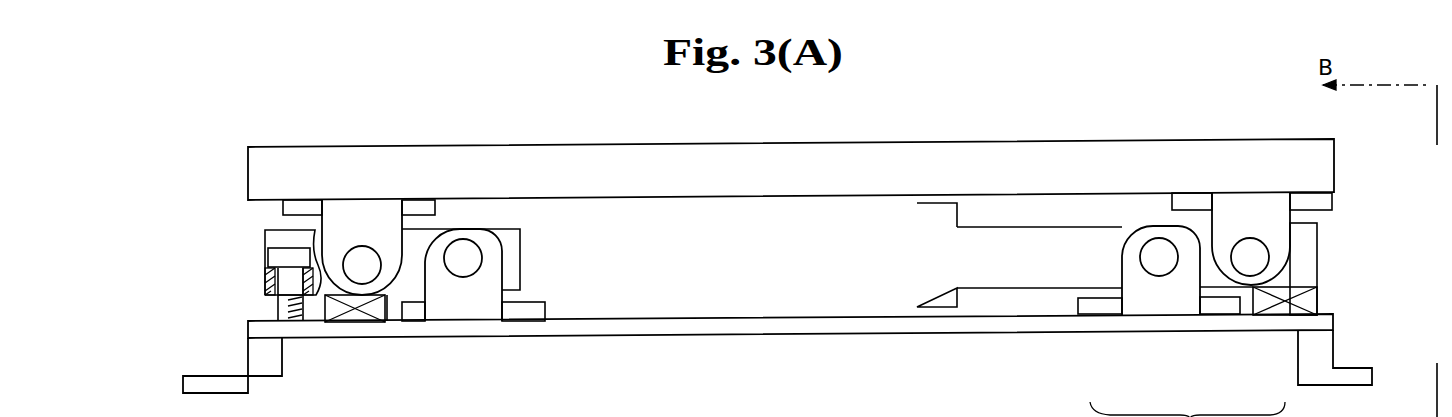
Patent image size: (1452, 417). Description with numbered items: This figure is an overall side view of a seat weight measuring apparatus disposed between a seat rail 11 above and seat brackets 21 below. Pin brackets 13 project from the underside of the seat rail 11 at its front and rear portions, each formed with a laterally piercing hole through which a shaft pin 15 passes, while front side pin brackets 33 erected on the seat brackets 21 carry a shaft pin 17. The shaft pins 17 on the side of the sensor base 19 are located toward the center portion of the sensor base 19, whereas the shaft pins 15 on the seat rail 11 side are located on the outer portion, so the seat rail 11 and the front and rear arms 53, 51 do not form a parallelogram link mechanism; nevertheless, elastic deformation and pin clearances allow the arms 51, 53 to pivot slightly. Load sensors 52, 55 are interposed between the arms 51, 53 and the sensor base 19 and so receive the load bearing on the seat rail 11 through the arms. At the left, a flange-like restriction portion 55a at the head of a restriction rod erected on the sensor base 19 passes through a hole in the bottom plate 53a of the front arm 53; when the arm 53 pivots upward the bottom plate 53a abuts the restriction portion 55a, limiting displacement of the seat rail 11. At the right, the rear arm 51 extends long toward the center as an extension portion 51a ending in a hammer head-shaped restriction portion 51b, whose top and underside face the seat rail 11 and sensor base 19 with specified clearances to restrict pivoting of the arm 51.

The seat rail 11 is at (818, 149).
The pin bracket 13 is at (333, 223).
The shaft pin 15 is at (415, 273).
The shaft pin 17 is at (467, 268).
The sensor base 19 is at (712, 328).
The seat bracket 21 is at (260, 357).
The front side pin bracket 33 is at (493, 268).
The rear arm 51 is at (1205, 268).
The extension portion 51a is at (997, 277).
The restriction portion 51b is at (927, 282).
The load sensor 52 is at (1313, 300).
The front arm 53 is at (365, 265).
The bottom plate 53a is at (290, 305).
The load sensor 55 is at (263, 288).
The restriction portion 55a is at (277, 259).